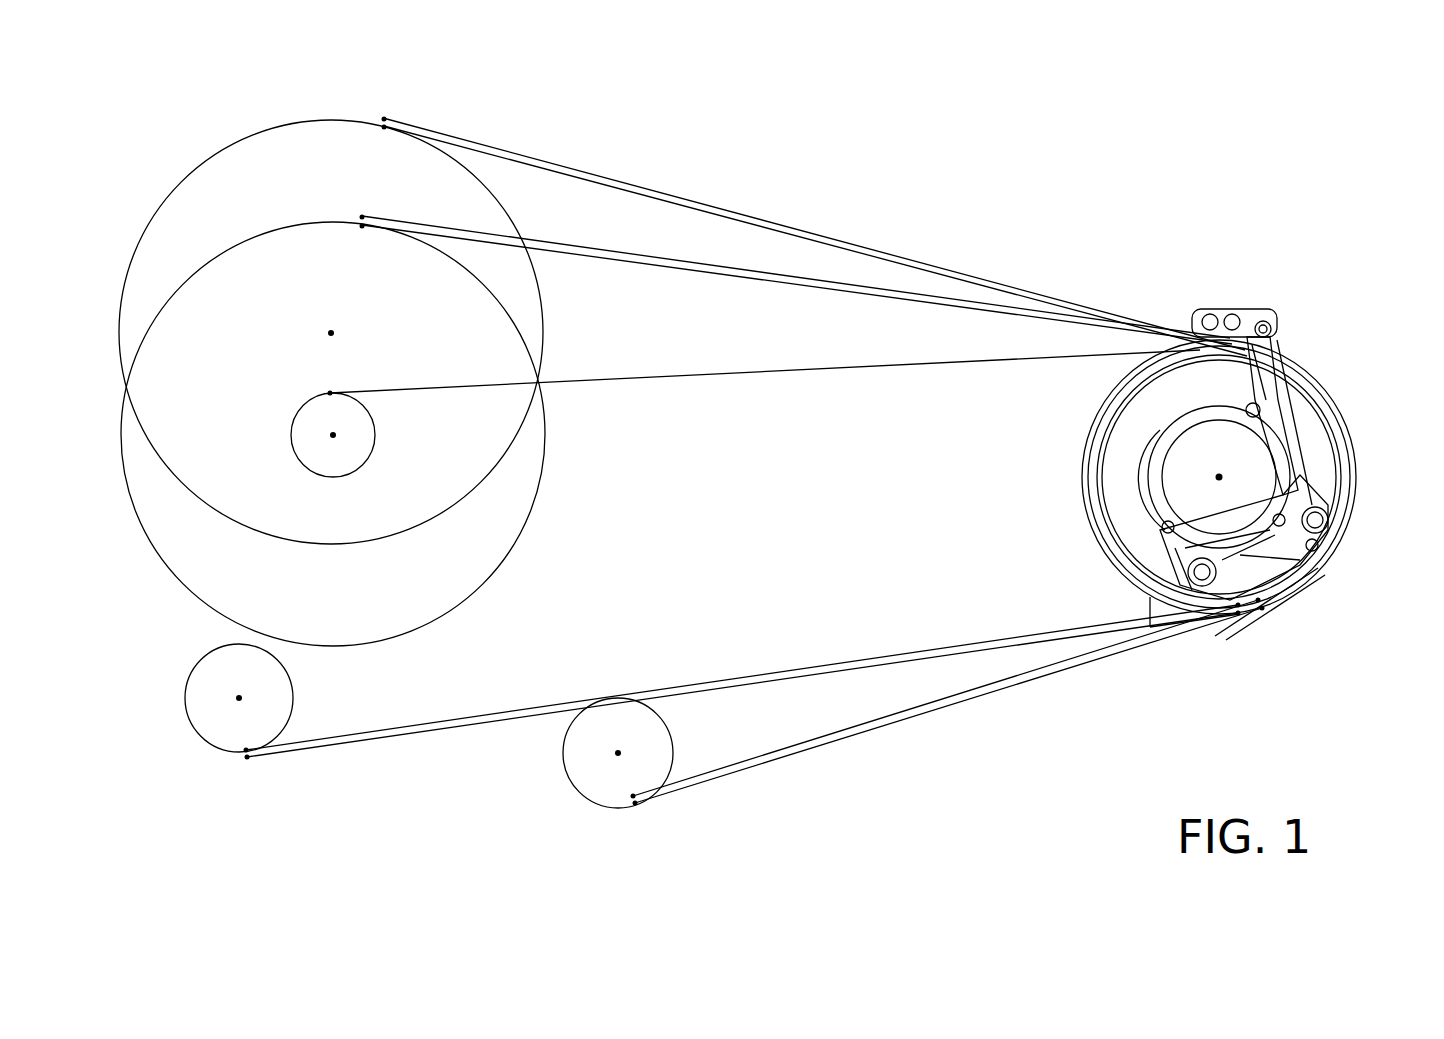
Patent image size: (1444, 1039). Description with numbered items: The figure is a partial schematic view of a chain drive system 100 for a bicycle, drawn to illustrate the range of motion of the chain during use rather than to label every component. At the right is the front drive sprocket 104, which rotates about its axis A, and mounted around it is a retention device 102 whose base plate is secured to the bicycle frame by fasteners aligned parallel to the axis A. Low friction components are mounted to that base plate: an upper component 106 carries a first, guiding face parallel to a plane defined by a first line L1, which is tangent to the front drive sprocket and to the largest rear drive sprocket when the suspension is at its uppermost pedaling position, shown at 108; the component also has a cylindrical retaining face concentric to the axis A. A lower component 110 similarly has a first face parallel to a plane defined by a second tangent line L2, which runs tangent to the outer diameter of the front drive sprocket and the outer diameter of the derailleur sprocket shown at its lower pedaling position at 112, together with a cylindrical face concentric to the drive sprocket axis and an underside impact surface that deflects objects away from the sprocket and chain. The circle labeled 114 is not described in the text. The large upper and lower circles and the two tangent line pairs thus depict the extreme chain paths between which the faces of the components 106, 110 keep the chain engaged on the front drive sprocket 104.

The chain drive system 100 is at (993, 144).
The retention device 102 is at (1132, 445).
The front drive sprocket 104 is at (1088, 472).
The upper component 106 is at (1248, 312).
The largest rear drive sprocket at uppermost pedaling position 108 is at (313, 119).
The lower component 110 is at (1253, 625).
The derailleur sprocket at lower pedaling position 112 is at (603, 801).
The large pulley (second position) 114 is at (316, 219).
The axis of the front drive sprocket A is at (1219, 477).
The first line L1 is at (856, 238).
The tangent line L2 is at (838, 746).